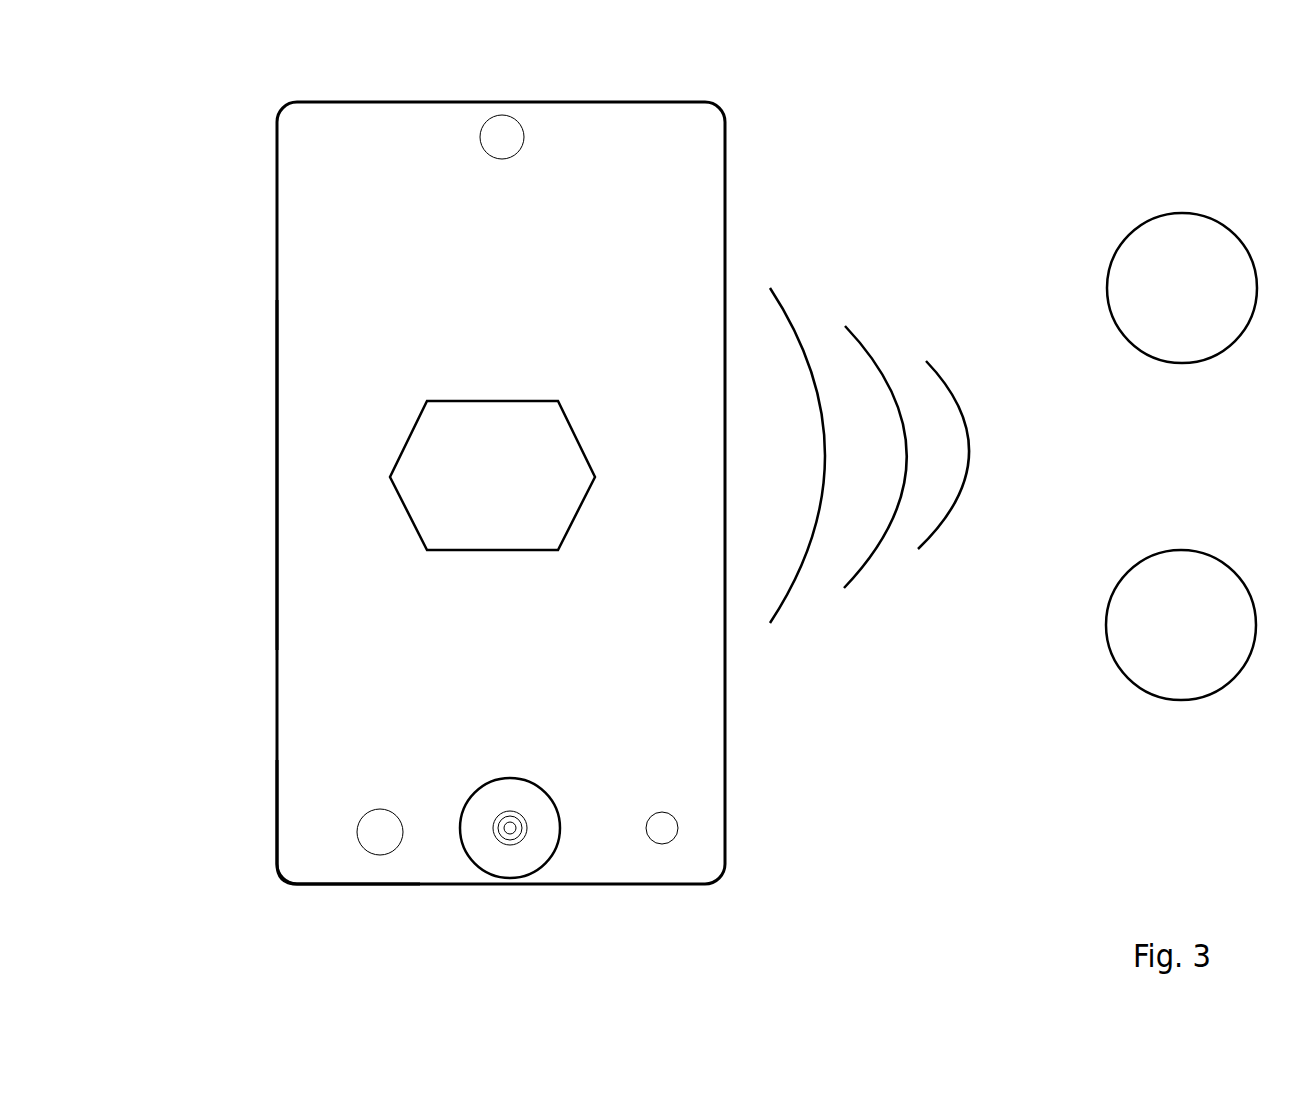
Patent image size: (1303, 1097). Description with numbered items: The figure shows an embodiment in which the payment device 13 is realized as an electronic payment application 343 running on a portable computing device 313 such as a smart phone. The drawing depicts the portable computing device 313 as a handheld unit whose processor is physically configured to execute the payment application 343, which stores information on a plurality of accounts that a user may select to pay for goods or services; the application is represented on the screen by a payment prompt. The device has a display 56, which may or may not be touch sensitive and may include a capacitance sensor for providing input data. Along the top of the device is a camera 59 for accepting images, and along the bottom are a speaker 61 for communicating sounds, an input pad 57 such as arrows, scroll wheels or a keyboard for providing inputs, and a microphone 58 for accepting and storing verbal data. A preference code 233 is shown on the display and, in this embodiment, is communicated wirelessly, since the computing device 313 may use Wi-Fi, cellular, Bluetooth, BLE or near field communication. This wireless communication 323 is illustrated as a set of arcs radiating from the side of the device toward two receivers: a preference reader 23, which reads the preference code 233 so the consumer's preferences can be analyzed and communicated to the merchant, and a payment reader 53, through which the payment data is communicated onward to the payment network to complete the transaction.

The payment device 13 is at (232, 662).
The portable computing device 313 is at (277, 840).
The display 56 is at (297, 475).
The camera 59 is at (487, 128).
The payment application 343 is at (380, 195).
The preference code 233 is at (408, 437).
The speaker 61 is at (378, 839).
The input pad 57 is at (490, 848).
The microphone 58 is at (657, 832).
The wireless communication 323 is at (836, 631).
The preference reader 23 is at (1180, 363).
The payment reader 53 is at (1184, 700).